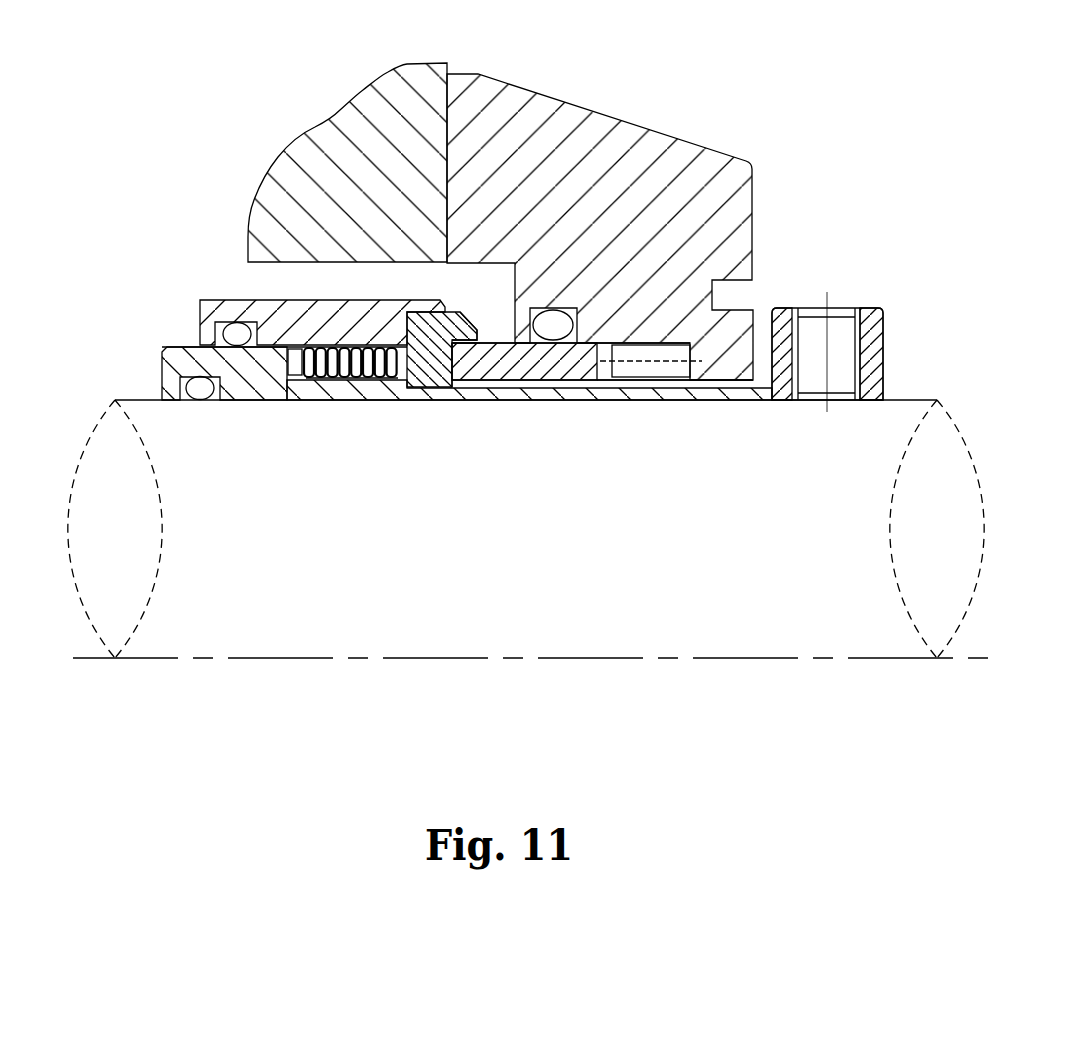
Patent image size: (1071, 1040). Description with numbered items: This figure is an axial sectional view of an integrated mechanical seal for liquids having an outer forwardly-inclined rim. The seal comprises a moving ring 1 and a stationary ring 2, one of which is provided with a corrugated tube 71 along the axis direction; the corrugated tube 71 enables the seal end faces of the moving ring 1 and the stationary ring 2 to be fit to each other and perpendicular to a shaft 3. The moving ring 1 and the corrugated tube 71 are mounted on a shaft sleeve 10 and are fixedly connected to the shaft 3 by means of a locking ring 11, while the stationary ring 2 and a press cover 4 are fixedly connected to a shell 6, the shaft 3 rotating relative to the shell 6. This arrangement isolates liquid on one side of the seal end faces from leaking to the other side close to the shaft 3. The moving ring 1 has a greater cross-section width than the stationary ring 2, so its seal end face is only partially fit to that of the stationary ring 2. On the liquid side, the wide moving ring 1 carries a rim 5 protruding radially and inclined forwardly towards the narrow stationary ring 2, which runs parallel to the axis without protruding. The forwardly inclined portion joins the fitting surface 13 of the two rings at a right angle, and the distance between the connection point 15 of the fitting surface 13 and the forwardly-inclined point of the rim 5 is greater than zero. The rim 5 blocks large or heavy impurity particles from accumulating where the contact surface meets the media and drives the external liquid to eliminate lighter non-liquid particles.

The moving ring 1 is at (406, 408).
The stationary ring 2 is at (602, 423).
The shaft 3 is at (529, 482).
The press cover 4 is at (635, 227).
The rim 5 is at (587, 183).
The shell 6 is at (308, 162).
The shaft sleeve 10 is at (224, 425).
The locking ring 11 is at (825, 392).
The fitting surface 13 is at (453, 343).
The connection point 15 is at (453, 343).
The corrugated tube 71 is at (319, 426).